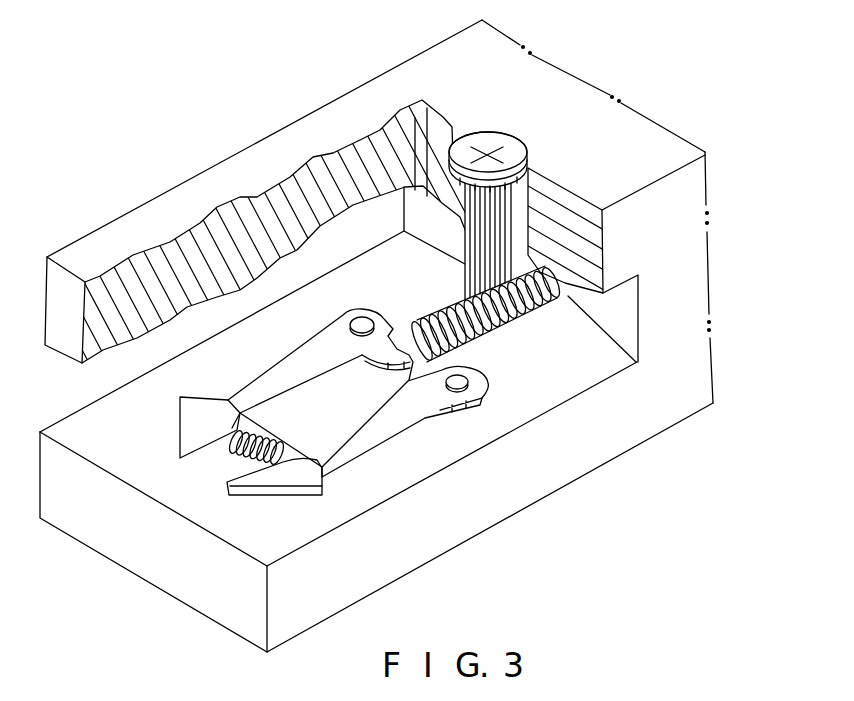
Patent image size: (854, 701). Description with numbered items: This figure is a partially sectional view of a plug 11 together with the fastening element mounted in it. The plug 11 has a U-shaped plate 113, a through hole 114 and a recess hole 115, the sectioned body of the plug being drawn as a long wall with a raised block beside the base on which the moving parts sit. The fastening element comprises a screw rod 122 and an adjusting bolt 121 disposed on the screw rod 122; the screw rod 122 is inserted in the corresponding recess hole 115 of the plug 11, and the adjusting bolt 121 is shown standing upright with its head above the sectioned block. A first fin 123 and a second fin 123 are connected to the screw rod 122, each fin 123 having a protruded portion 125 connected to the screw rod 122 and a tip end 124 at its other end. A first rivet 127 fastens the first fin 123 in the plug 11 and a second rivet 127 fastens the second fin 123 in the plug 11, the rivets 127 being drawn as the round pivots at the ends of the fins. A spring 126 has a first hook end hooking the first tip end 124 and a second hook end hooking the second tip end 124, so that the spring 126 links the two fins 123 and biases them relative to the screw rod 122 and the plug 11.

The plug 11 is at (125, 178).
The U-shaped plate 113 is at (597, 337).
The through hole 114 is at (528, 143).
The recess hole 115 is at (572, 302).
The adjusting bolt 121 is at (485, 143).
The screw rod 122 is at (510, 332).
The fin 123 is at (335, 435).
The tip end 124 is at (297, 473).
The protruded portion 125 is at (386, 338).
The spring 126 is at (230, 455).
The rivet 127 is at (452, 390).